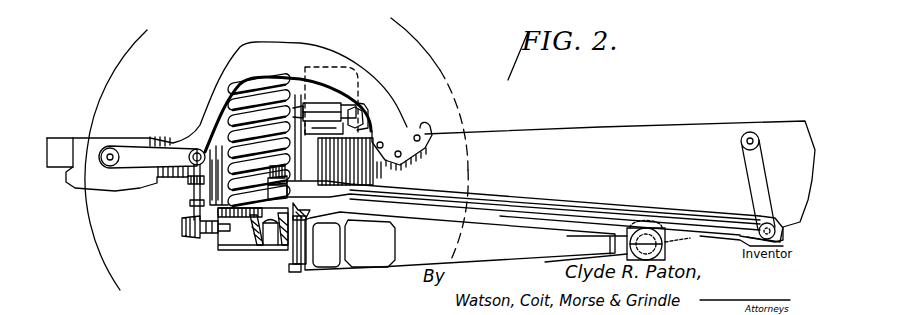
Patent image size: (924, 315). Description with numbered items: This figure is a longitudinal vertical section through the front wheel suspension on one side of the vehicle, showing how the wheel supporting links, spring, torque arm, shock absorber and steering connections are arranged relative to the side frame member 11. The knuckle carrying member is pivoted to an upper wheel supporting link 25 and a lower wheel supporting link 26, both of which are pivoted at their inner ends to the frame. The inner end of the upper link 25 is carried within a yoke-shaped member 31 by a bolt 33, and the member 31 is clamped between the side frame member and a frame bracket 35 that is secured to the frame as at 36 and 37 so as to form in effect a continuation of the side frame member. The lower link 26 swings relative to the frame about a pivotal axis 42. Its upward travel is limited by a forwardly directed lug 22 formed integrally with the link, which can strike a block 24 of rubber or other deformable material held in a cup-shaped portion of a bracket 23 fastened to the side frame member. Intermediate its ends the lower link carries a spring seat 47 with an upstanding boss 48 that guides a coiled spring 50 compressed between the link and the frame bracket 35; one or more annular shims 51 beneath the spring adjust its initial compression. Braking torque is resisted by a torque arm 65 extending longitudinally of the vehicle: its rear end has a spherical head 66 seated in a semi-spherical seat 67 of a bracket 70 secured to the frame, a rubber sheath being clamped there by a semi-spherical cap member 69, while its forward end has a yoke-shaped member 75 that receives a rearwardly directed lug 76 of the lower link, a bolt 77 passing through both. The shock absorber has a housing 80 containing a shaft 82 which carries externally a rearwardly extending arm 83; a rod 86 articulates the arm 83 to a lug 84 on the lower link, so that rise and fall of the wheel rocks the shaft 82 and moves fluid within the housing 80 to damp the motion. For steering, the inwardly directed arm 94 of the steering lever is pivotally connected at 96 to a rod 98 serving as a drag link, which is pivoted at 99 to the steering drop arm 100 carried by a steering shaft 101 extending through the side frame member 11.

The side frame member 11 is at (600, 130).
The forwardly directed lug 22 is at (198, 238).
The bracket 23 is at (200, 149).
The block 24 is at (190, 186).
The upper wheel supporting link 25 is at (316, 104).
The lower wheel supporting link 26 is at (272, 262).
The yoke-shaped member 31 is at (362, 113).
The bolt 33 is at (372, 112).
The frame bracket 35 is at (342, 76).
The securing point 36 is at (418, 131).
The securing point 37 is at (122, 148).
The pivotal axis 42 is at (306, 216).
The spring seat 47 is at (245, 224).
The upstanding boss 48 is at (231, 205).
The coiled spring 50 is at (243, 97).
The shim 51 is at (248, 222).
The torque arm 65 is at (470, 236).
The spherical head 66 is at (664, 207).
The semi-spherical seat 67 is at (668, 247).
The semi-spherical cap member 69 is at (627, 257).
The bracket 70 is at (640, 216).
The yoke-shaped member 75 is at (325, 263).
The rearwardly directed lug 76 is at (289, 252).
The bolt 77 is at (300, 273).
The housing 80 is at (82, 186).
The shaft 82 is at (106, 162).
The rearwardly extending arm 83 is at (142, 158).
The lug 84 is at (185, 228).
The rod 86 is at (190, 206).
The inwardly directed arm 94 is at (289, 183).
The pivotal connection 96 is at (289, 175).
The rod 98 is at (533, 207).
The pivotal connection 99 is at (752, 212).
The steering drop arm 100 is at (745, 163).
The steering shaft 101 is at (753, 134).